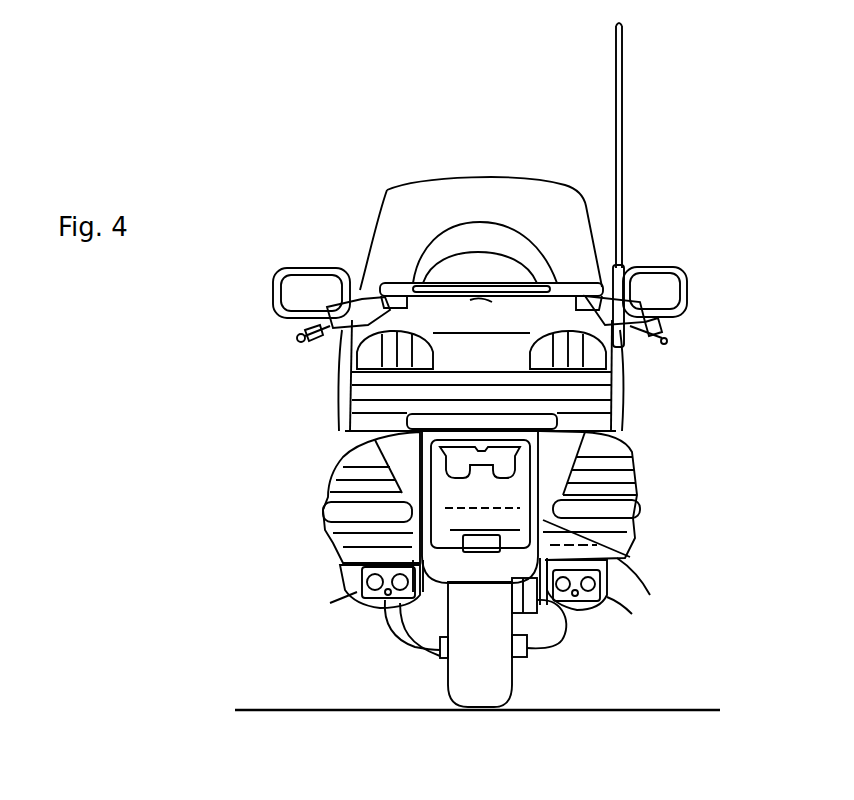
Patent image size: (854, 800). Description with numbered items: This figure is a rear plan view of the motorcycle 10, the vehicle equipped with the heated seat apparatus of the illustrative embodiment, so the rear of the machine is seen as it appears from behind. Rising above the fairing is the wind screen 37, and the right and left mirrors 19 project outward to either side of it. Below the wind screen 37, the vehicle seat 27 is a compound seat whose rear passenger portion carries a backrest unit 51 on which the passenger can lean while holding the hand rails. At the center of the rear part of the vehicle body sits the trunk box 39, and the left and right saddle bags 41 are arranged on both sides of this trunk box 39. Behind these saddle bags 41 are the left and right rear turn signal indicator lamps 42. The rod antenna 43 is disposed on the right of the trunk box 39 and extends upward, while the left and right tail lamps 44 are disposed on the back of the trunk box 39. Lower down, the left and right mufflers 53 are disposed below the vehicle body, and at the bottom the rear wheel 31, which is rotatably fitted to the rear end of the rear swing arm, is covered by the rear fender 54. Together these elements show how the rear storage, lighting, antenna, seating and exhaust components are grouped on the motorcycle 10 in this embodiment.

The motorcycle 10 is at (233, 128).
The mirrors 19 is at (297, 268).
The vehicle seat 27 is at (486, 212).
The rear wheel 31 is at (457, 620).
The wind screen 37 is at (380, 182).
The trunk box 39 is at (490, 313).
The saddle bags 41 is at (330, 447).
The rear turn signal indicator lamps 42 is at (340, 478).
The rod antenna 43 is at (622, 83).
The tail lamps 44 is at (357, 356).
The backrest unit 51 is at (455, 222).
The mufflers 53 is at (353, 590).
The rear fender 54 is at (627, 562).